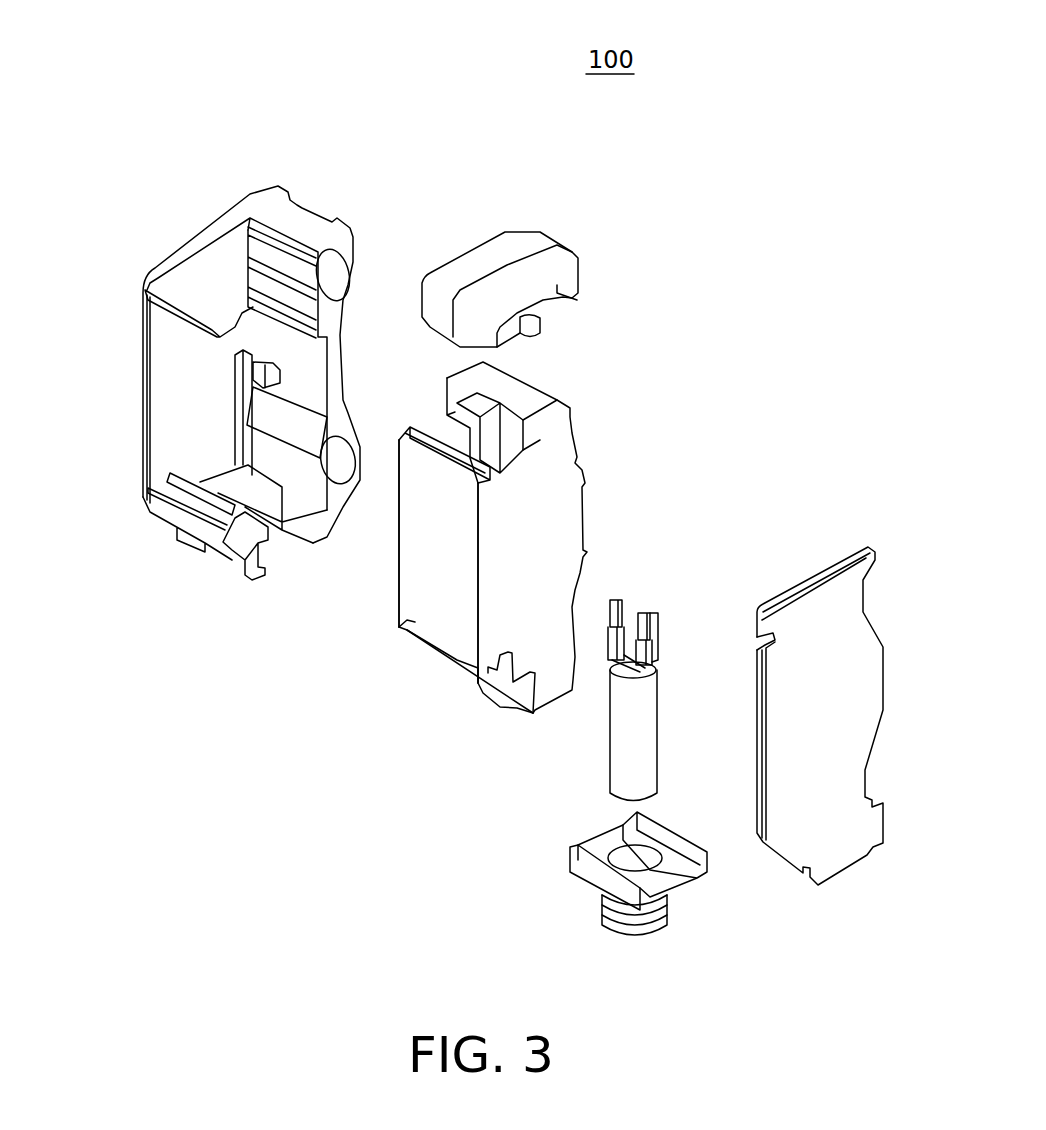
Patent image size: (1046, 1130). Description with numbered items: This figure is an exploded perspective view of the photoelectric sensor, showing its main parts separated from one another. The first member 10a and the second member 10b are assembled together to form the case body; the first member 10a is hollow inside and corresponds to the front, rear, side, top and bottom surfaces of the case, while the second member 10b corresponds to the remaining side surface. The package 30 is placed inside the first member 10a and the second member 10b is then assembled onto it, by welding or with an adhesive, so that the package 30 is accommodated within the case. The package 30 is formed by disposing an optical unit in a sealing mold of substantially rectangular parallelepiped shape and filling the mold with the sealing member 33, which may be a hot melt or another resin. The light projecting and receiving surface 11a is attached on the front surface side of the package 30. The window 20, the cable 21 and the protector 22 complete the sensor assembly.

The first member 10a is at (158, 262).
The second member 10b is at (847, 700).
The window 20 is at (473, 272).
The package 30 is at (598, 464).
The sealing member 33 is at (540, 540).
The light projecting and receiving surface 11a is at (420, 547).
The cable 21 is at (628, 710).
The protector 22 is at (593, 873).